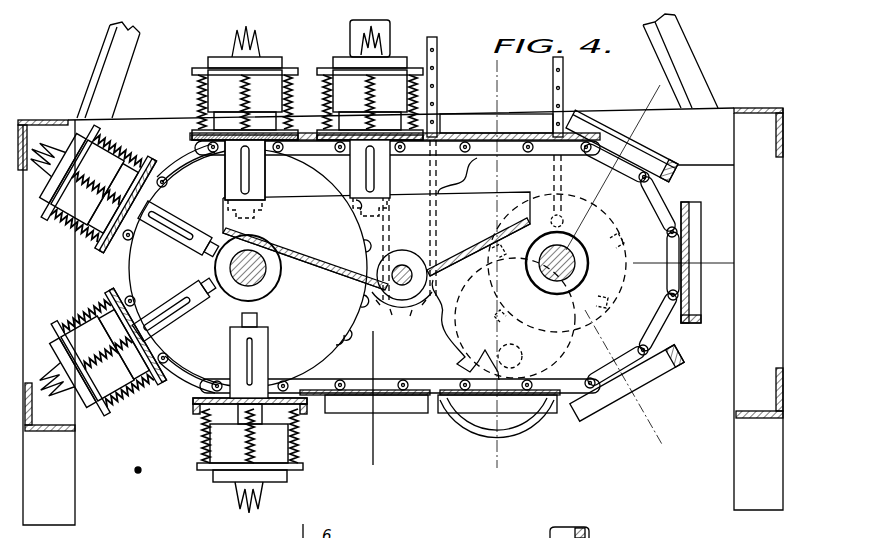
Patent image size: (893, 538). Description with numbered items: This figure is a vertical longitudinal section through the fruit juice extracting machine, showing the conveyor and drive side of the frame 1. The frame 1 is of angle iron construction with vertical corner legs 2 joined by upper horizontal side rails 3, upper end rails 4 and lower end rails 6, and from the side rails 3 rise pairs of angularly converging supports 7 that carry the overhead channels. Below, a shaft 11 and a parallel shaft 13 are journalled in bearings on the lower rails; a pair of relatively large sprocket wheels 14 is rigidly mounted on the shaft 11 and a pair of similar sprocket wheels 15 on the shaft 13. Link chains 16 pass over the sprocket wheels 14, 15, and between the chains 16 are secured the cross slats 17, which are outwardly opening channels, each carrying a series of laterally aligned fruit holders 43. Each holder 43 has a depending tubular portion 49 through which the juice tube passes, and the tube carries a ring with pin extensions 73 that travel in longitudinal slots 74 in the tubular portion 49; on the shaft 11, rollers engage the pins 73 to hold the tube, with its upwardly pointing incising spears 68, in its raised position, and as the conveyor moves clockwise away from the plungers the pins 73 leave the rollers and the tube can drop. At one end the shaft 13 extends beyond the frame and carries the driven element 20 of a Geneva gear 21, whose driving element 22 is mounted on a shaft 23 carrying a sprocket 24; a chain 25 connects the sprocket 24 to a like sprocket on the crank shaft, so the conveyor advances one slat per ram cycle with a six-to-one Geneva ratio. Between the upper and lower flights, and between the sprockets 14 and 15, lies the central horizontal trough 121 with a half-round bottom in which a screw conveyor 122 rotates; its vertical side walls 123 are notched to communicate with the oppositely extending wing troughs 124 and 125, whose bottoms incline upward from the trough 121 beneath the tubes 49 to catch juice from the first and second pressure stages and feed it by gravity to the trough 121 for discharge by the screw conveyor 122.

The frame 1 is at (745, 74).
The vertical corner legs 2 is at (70, 505).
The upper horizontal side rails 3 is at (614, 116).
The upper end rails 4 is at (28, 120).
The lower end rails 6 is at (57, 431).
The angularly converging supports 7 is at (100, 62).
The shaft 11 is at (262, 282).
The shaft 13 is at (598, 218).
The sprocket wheels 14 is at (350, 340).
The sprocket wheels 15 is at (648, 312).
The link chains 16 is at (386, 408).
The cross slats 17 is at (662, 164).
The driven element 20 is at (622, 251).
The Geneva gear 21 is at (592, 316).
The driving element 22 is at (440, 345).
The shaft 23 is at (518, 352).
The sprocket 24 is at (440, 362).
The chain 25 is at (438, 78).
The fruit holders 43 is at (232, 92).
The depending tubular portion 49 is at (268, 186).
The incising knives or spears 68 is at (258, 43).
The pin extensions 73 is at (152, 215).
The longitudinal slots 74 is at (247, 354).
The central horizontal trough 121 is at (396, 306).
The screw conveyor 122 is at (412, 262).
The vertical side walls 123 is at (380, 220).
The wing troughs 124 is at (322, 300).
The wing troughs 125 is at (462, 291).